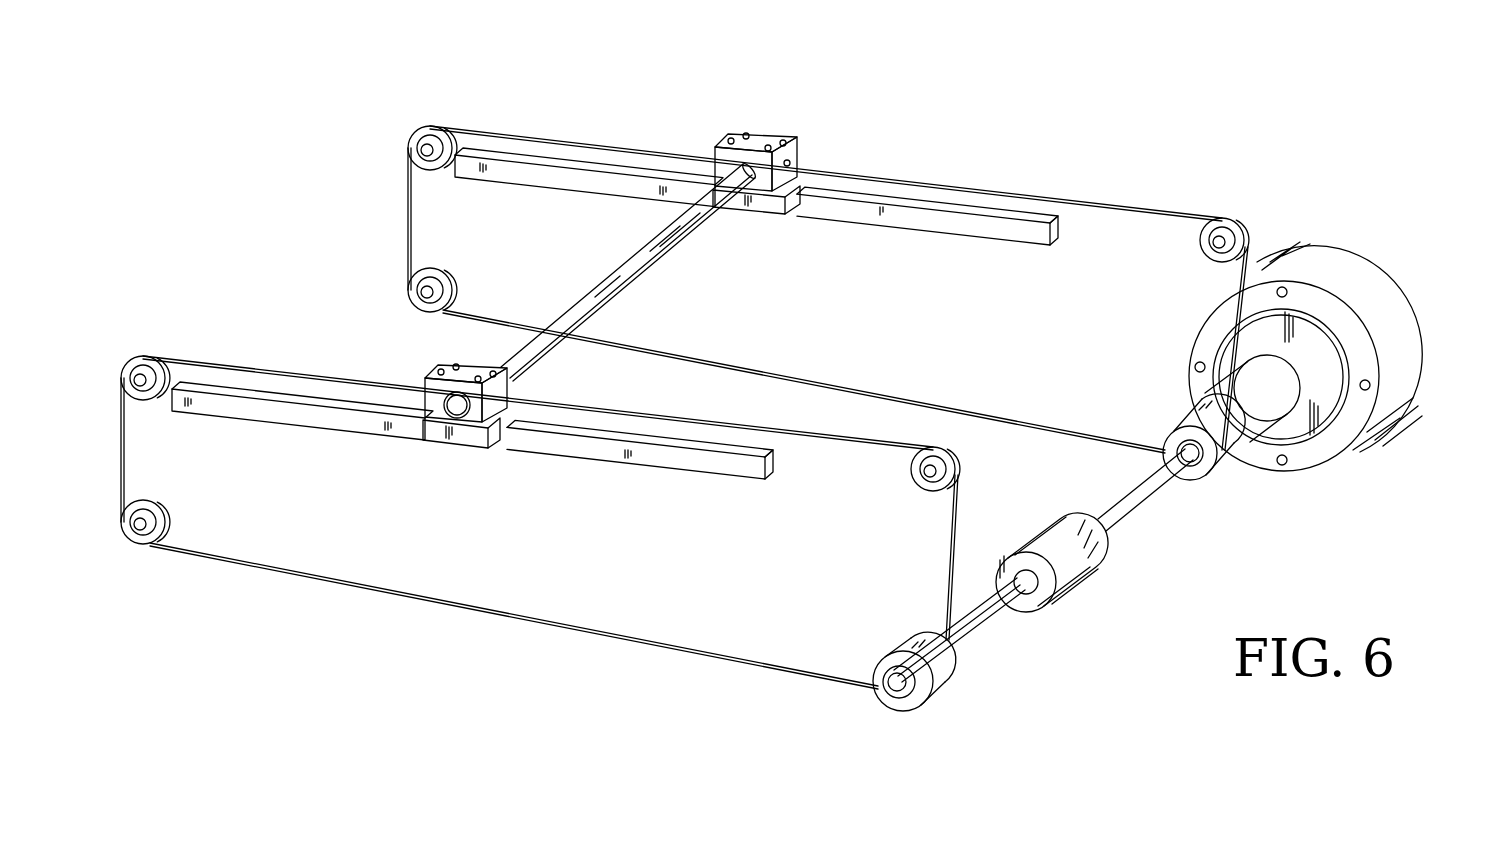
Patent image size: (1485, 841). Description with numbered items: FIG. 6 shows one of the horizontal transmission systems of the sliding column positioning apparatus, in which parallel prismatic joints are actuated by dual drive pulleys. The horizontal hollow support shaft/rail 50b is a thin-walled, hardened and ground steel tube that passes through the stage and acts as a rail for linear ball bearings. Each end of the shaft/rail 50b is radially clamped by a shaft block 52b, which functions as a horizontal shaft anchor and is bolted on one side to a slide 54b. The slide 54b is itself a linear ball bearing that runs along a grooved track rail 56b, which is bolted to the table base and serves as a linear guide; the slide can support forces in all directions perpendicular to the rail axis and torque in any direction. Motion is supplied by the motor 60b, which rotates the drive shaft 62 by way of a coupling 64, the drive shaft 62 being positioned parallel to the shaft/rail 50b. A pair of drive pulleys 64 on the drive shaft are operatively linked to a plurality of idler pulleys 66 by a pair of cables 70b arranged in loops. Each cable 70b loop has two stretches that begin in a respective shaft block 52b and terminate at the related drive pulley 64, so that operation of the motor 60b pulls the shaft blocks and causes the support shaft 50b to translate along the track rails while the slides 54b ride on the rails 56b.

The horizontal hollow support shaft/rail 50b is at (685, 233).
The shaft block 52b is at (764, 135).
The slide 54b is at (765, 208).
The track rail 56b is at (945, 232).
The motor 60b is at (1418, 398).
The drive shaft 62 is at (1148, 506).
The coupling / drive pulley 64 is at (1212, 470).
The idler pulley 66 is at (430, 146).
The cable 70b is at (1038, 193).